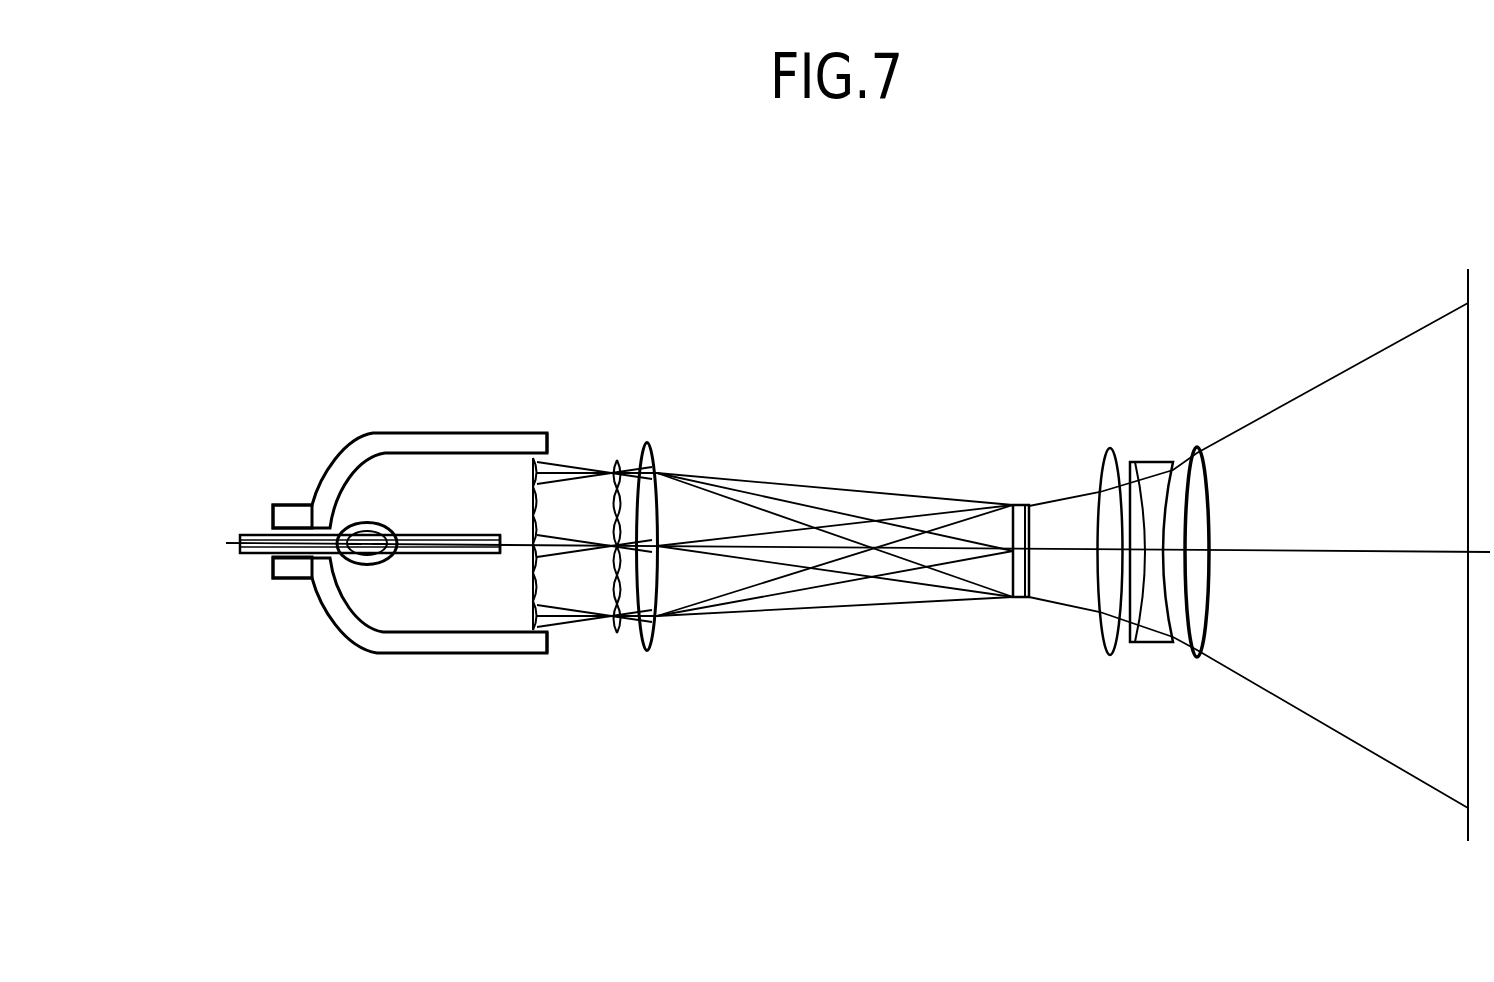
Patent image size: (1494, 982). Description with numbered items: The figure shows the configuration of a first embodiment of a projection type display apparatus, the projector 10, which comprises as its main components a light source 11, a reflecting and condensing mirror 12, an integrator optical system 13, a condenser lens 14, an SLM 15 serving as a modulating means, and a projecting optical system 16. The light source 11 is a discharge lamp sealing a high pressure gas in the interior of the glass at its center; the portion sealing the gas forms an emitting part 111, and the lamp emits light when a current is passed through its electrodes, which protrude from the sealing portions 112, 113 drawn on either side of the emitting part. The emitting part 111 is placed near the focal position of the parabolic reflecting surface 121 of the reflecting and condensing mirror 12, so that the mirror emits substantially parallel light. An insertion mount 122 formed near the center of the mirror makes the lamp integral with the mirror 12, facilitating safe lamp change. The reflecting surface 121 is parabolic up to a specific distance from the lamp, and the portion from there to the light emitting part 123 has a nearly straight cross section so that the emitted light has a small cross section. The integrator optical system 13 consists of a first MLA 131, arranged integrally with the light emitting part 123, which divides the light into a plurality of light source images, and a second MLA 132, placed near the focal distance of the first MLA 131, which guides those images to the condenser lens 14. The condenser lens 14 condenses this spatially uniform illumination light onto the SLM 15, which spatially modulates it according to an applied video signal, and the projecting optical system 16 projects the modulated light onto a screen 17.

The projector 10 is at (856, 241).
The light source 11 is at (332, 595).
The emitting part 111 is at (378, 521).
The sealing portion 112 is at (232, 546).
The sealing portion 113 is at (508, 554).
The reflecting and condensing mirror 12 is at (425, 547).
The reflecting surface 121 is at (357, 477).
The insertion mount 122 is at (285, 522).
The light emitting part 123 is at (555, 647).
The integrator optical system 13 is at (579, 456).
The first MLA 131 is at (524, 460).
The second MLA 132 is at (619, 461).
The condenser lens 14 is at (658, 450).
The SLM 15 is at (1023, 503).
The projecting optical system 16 is at (1160, 432).
The screen 17 is at (1466, 288).